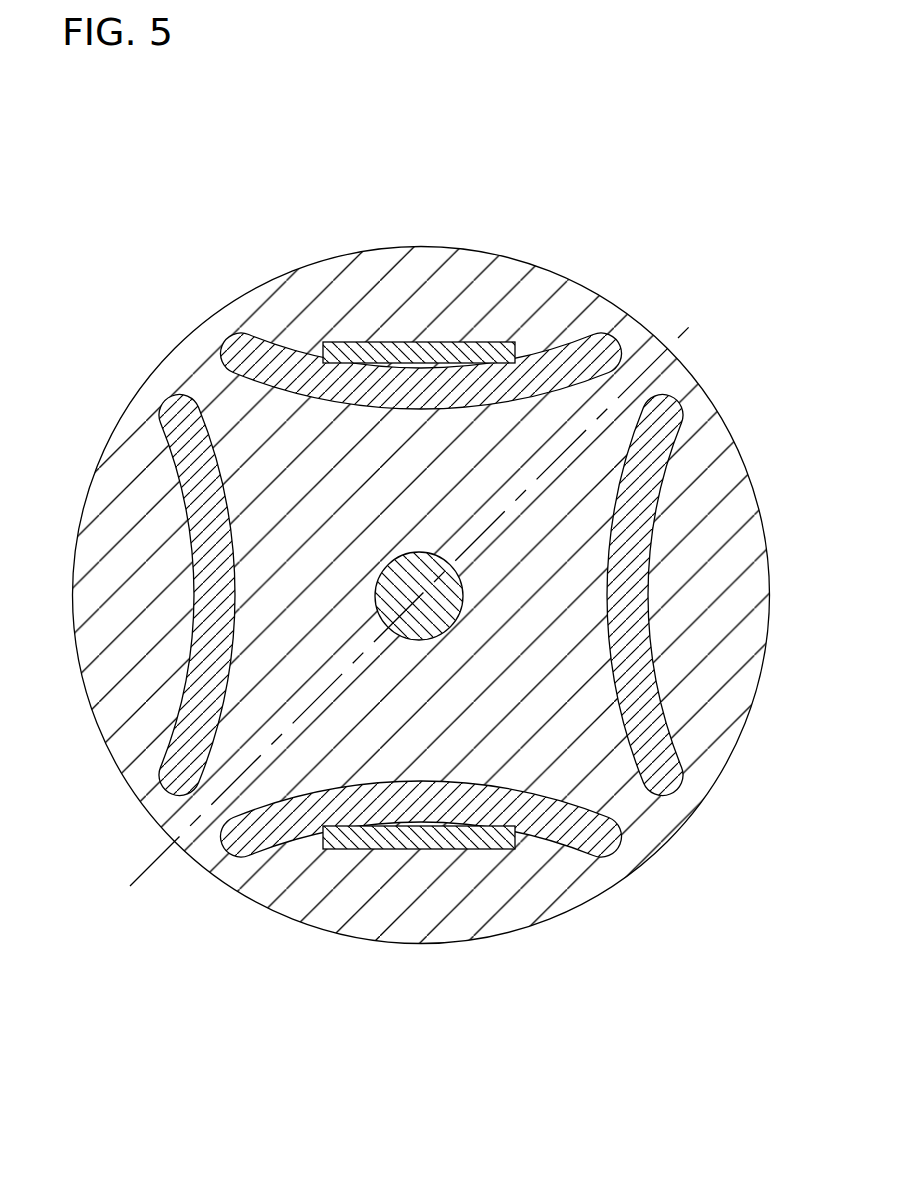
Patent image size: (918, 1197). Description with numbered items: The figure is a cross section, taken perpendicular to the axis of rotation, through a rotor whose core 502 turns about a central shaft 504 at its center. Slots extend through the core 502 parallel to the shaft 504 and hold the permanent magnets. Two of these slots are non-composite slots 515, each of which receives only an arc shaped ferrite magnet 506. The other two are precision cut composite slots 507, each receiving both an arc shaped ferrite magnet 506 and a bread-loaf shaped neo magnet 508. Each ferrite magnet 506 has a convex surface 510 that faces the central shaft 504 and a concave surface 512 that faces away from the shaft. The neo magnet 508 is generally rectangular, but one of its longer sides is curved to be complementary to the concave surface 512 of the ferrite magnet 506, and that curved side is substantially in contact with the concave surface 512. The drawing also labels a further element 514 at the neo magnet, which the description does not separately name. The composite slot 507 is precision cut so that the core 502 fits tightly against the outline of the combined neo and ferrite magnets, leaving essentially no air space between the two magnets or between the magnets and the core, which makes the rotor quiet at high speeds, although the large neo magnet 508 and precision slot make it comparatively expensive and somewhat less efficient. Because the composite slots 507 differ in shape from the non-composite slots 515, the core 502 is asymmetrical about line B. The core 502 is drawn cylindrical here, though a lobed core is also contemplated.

The core 502 is at (640, 828).
The central shaft 504 is at (433, 624).
The arc shaped ferrite magnet 506 is at (633, 328).
The precision cut composite slot 507 is at (587, 340).
The bread-loaf shaped neo magnet 508 is at (432, 362).
The convex surface 510 is at (226, 395).
The concave surface 512 is at (228, 393).
The pole plate 514 is at (500, 362).
The non-composite slot 515 is at (677, 433).
The line B is at (143, 878).